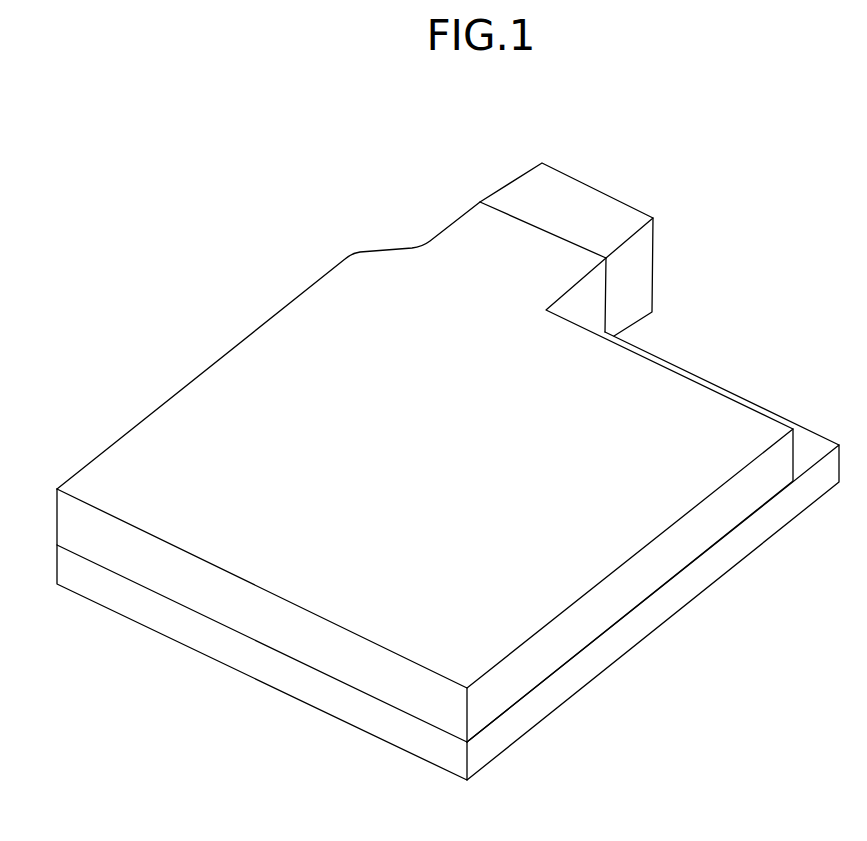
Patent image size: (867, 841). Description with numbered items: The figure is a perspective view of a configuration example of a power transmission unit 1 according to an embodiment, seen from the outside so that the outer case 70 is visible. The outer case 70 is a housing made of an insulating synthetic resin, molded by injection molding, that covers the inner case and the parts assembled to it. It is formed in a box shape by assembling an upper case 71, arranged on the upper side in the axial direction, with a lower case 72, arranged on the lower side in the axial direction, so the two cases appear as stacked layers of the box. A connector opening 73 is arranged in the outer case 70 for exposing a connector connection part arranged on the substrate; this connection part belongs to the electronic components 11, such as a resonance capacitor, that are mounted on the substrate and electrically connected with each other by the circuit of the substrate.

The power transmission unit 1 is at (269, 290).
The electronic components 11 is at (598, 206).
The outer case 70 is at (698, 748).
The upper case 71 is at (610, 605).
The lower case 72 is at (657, 622).
The connector opening 73 is at (484, 226).